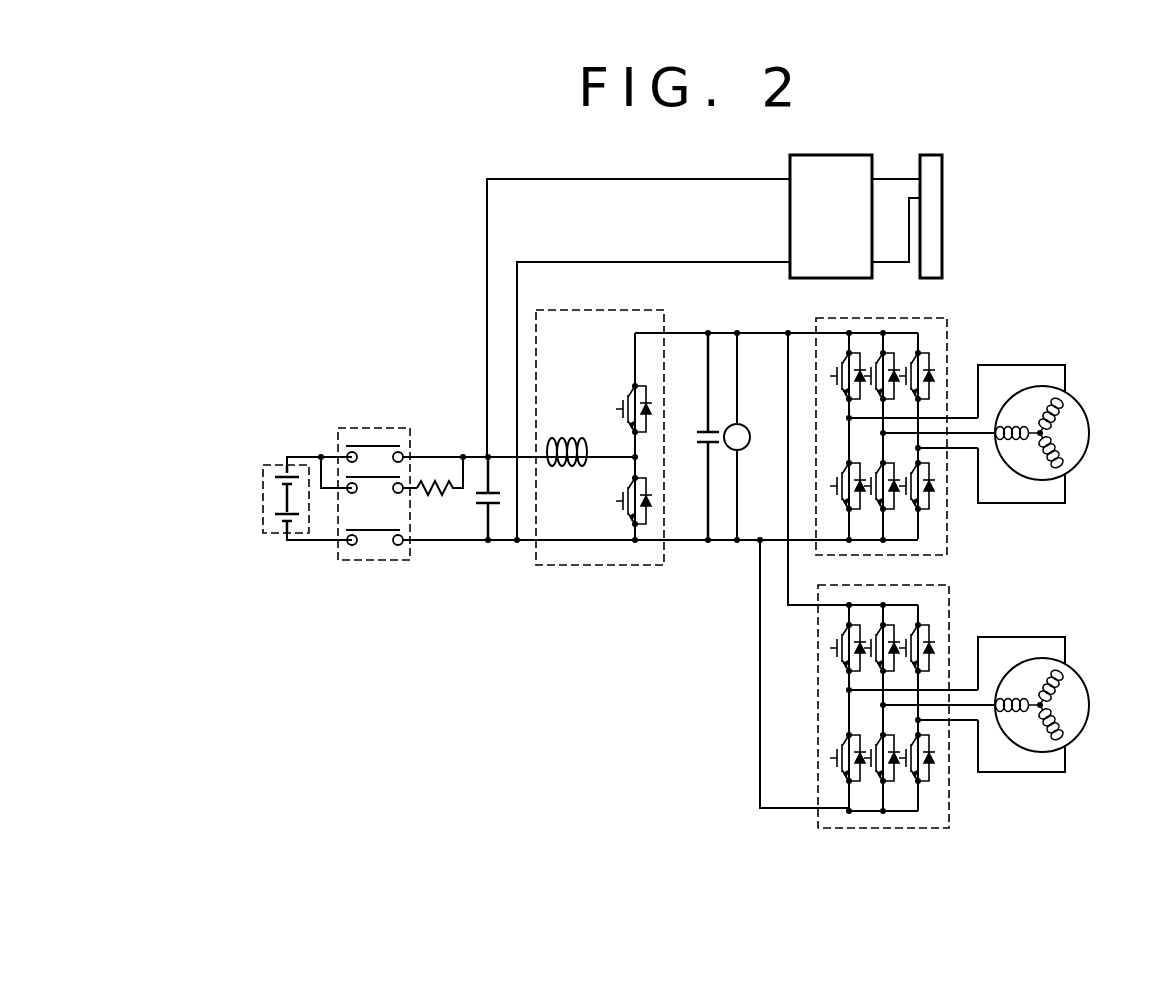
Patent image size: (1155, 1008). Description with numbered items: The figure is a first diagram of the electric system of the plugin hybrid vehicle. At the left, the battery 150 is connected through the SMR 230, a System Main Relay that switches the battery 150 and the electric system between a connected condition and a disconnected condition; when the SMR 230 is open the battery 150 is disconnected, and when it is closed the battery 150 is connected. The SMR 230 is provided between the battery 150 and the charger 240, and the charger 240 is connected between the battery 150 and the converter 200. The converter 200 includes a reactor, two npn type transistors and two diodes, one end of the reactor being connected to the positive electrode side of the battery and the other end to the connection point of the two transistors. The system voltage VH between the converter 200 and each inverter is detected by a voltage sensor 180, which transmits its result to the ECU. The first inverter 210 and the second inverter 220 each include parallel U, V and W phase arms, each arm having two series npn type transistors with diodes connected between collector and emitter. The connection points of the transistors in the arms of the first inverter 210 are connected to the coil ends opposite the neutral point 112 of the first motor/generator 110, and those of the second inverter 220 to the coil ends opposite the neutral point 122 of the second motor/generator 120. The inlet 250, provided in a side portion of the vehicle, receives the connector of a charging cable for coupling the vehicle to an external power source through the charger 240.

The first motor/generator 110 is at (1063, 417).
The neutral point 112 is at (1040, 431).
The second motor/generator 120 is at (1063, 690).
The neutral point 122 is at (1040, 703).
The battery 150 is at (272, 466).
The voltage sensor 180 is at (746, 449).
The converter 200 is at (566, 565).
The first inverter 210 is at (950, 527).
The second inverter 220 is at (950, 793).
The System Main Relay 230 is at (372, 428).
The charger 240 is at (790, 222).
The inlet 250 is at (943, 216).